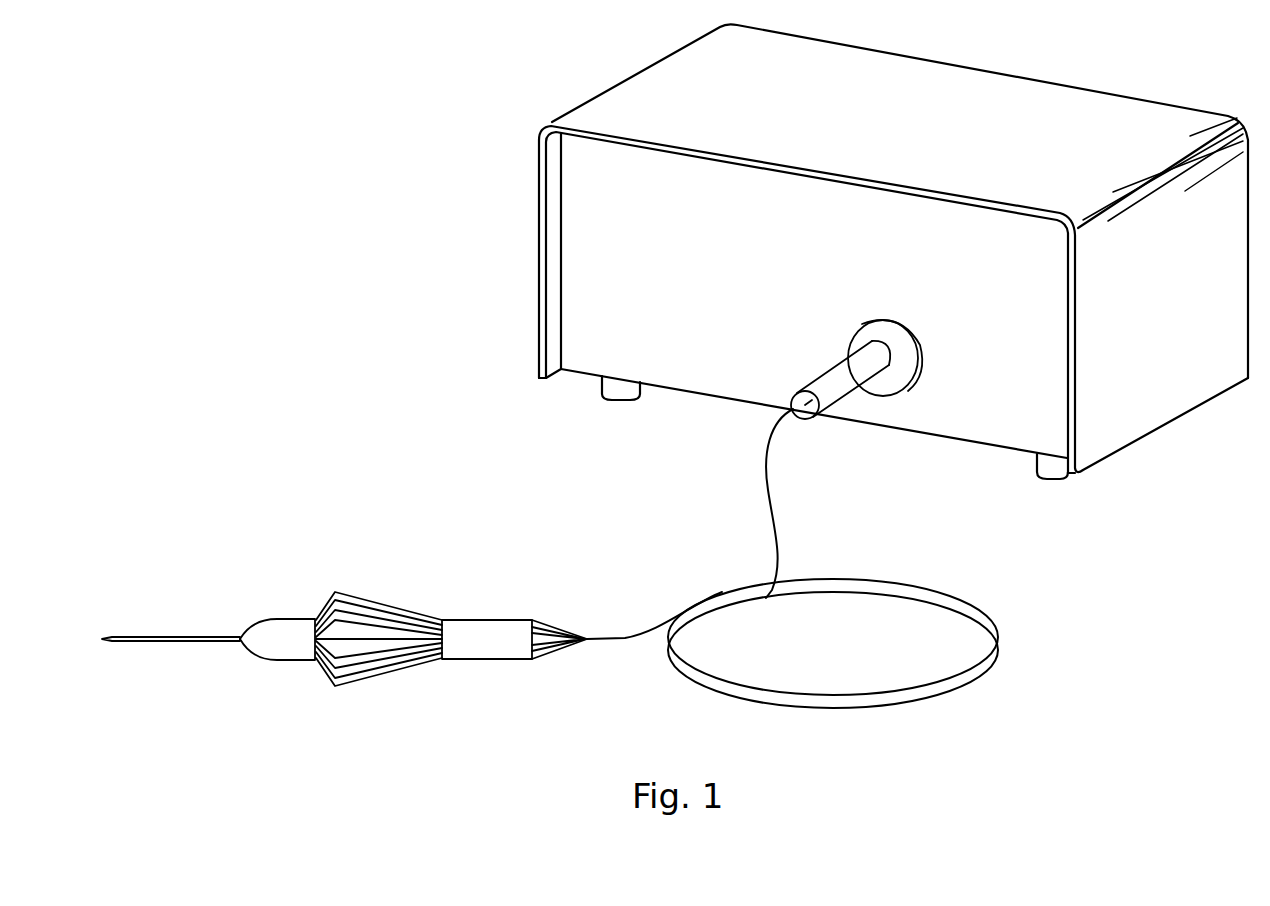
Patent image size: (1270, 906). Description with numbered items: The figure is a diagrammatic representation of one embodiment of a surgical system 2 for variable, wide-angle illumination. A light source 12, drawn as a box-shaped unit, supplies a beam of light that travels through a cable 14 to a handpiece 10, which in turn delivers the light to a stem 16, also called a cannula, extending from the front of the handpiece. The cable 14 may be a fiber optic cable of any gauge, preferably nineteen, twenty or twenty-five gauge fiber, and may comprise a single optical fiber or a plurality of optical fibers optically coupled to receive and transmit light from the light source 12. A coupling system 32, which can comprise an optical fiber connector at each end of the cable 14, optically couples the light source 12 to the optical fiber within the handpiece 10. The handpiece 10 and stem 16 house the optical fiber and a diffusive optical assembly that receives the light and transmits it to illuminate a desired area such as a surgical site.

The surgical system 2 is at (338, 319).
The light source 12 is at (538, 213).
The coupling system 32 is at (565, 624).
The cable 14 is at (943, 690).
The handpiece 10 is at (390, 603).
The stem 16 is at (160, 638).